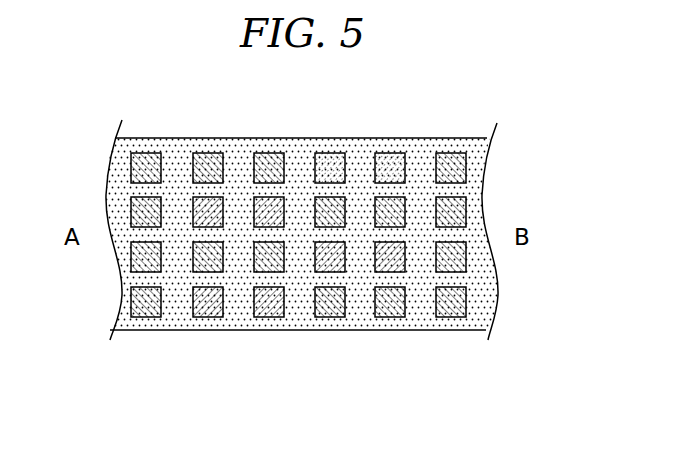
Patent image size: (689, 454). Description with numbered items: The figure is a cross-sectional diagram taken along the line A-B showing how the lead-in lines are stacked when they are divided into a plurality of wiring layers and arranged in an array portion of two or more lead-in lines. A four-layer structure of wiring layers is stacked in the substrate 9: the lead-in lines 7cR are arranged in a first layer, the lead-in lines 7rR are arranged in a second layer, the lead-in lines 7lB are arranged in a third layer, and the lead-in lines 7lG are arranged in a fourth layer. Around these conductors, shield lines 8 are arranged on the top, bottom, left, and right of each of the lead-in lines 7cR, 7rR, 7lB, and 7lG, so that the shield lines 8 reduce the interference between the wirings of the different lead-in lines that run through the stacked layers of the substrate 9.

The substrate 9 is at (177, 152).
The lead-in lines 7lB is at (252, 211).
The lead-in lines 7lG is at (391, 153).
The shield lines 8 is at (406, 212).
The lead-in lines 7cR is at (265, 318).
The lead-in lines 7rR is at (375, 262).